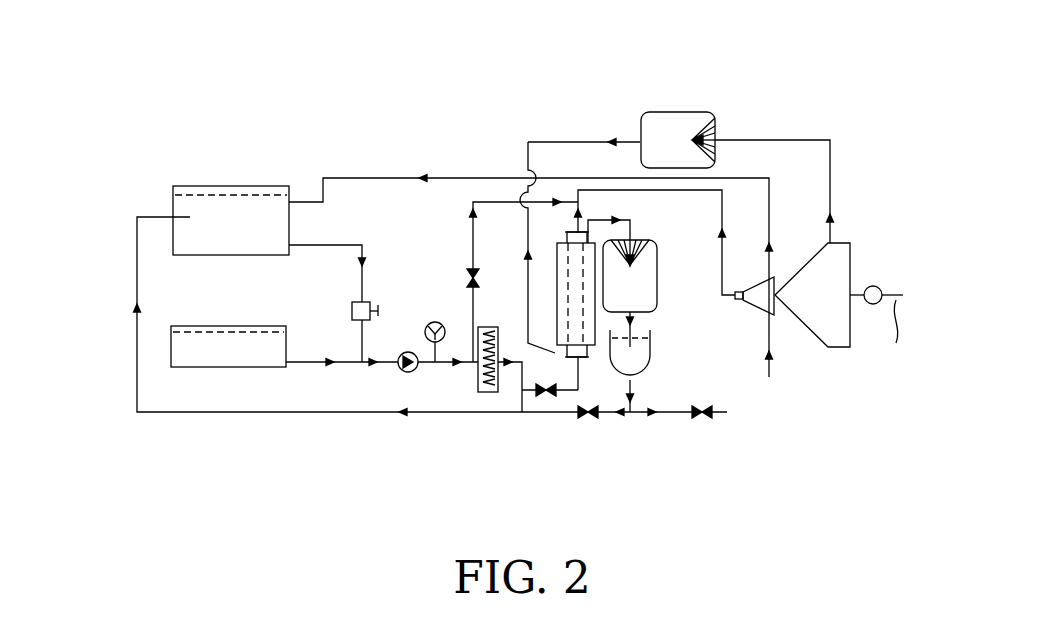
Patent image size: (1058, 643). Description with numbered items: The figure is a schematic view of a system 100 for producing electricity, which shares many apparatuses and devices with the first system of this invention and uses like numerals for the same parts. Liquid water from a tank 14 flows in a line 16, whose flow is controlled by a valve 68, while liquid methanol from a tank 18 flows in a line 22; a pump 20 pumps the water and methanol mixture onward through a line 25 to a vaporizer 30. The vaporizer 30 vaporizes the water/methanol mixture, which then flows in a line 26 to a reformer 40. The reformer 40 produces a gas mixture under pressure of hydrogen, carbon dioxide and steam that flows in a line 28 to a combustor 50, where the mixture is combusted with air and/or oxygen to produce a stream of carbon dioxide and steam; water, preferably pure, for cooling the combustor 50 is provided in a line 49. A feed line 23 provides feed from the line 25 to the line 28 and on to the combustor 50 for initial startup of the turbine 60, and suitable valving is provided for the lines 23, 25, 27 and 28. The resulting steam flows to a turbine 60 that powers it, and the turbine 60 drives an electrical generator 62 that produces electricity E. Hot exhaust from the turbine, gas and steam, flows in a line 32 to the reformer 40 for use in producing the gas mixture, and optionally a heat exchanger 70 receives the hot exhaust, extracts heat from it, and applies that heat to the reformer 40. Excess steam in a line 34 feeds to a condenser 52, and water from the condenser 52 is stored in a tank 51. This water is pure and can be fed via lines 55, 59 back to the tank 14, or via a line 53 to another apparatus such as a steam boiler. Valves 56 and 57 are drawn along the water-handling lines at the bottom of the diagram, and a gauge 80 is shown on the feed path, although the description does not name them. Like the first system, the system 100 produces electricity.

The system 100 is at (524, 262).
The tank 14 is at (289, 218).
The line 16 is at (364, 283).
The tank 18 is at (288, 343).
The pump 20 is at (408, 372).
The line 22 is at (310, 364).
The feed line 23 is at (473, 240).
The line 25 is at (446, 364).
The line 26 is at (527, 414).
The line 27 is at (570, 229).
The line 28 is at (680, 191).
The vaporizer 30 is at (491, 327).
The line 32 is at (753, 140).
The line 34 is at (602, 220).
The reformer 40 is at (553, 245).
The line 49 is at (768, 333).
The combustor 50 is at (752, 310).
The tank 51 is at (650, 348).
The condenser 52 is at (657, 266).
The line 53 is at (673, 414).
The line 55 is at (770, 202).
The valve 56 is at (579, 416).
The valve 57 is at (700, 418).
The line 59 is at (438, 414).
The turbine 60 is at (830, 243).
The electrical generator 62 is at (874, 286).
The valve 68 is at (352, 302).
The heat exchanger 70 is at (673, 112).
The pressure gauge 80 is at (435, 322).